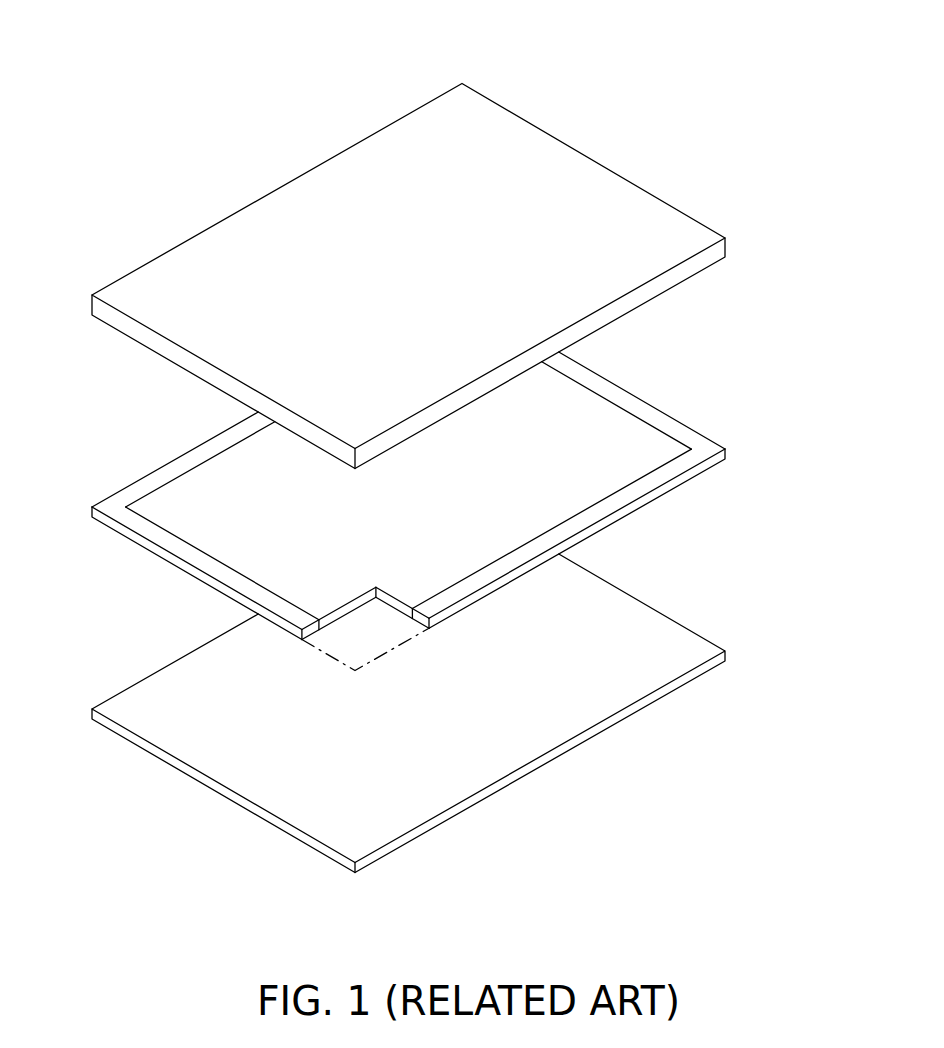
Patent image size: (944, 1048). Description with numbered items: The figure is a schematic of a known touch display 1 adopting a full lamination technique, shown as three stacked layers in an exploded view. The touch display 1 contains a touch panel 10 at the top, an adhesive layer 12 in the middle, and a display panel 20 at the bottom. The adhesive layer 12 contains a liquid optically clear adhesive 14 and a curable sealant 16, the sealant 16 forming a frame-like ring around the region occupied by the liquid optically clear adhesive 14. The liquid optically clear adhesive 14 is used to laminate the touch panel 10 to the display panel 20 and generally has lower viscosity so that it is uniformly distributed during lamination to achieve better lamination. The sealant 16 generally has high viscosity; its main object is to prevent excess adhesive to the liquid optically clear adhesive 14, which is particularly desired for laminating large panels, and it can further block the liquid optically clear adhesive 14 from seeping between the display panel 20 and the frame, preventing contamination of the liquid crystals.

The touch display 1 is at (623, 77).
The touch panel 10 is at (628, 198).
The adhesive layer 12 is at (453, 511).
The liquid optically clear adhesive 14 is at (653, 440).
The curable sealant 16 is at (432, 560).
The display panel 20 is at (672, 635).